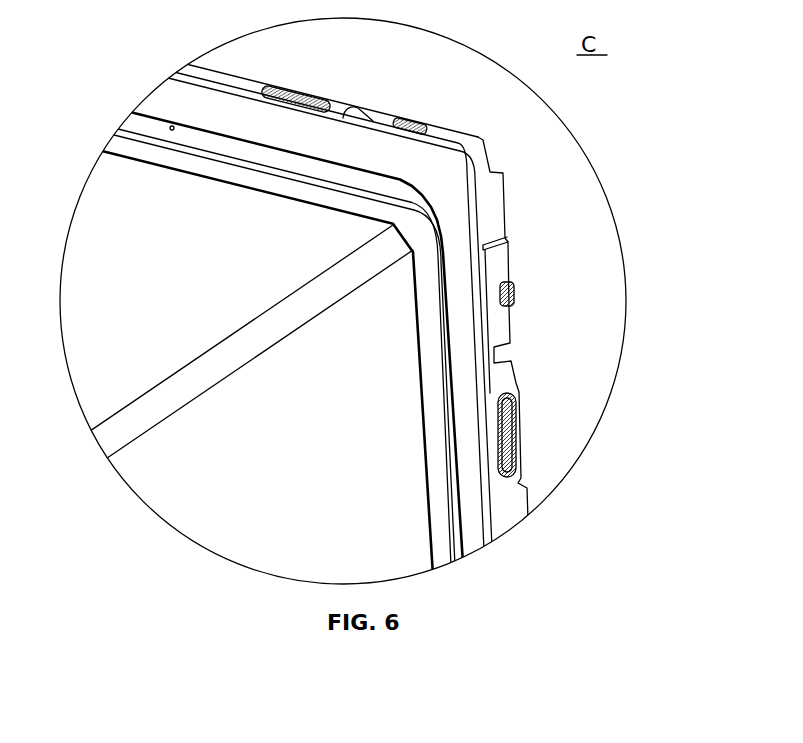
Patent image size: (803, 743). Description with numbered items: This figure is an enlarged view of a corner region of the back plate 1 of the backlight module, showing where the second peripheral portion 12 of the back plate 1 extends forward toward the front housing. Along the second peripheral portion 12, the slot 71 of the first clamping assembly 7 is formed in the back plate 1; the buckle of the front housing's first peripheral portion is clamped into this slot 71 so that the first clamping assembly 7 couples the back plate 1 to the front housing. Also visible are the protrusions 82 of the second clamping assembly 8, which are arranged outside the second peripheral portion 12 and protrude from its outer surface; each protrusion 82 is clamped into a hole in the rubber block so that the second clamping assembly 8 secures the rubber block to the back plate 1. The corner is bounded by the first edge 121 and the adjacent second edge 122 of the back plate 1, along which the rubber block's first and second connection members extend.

The back plate 1 is at (369, 300).
The first clamping assembly 7 is at (403, 256).
The slot 71 is at (280, 90).
The second clamping assembly 8 is at (554, 185).
The protrusion 82 is at (413, 121).
The second peripheral portion 12 is at (432, 307).
The first edge 121 is at (434, 133).
The second edge 122 is at (510, 236).